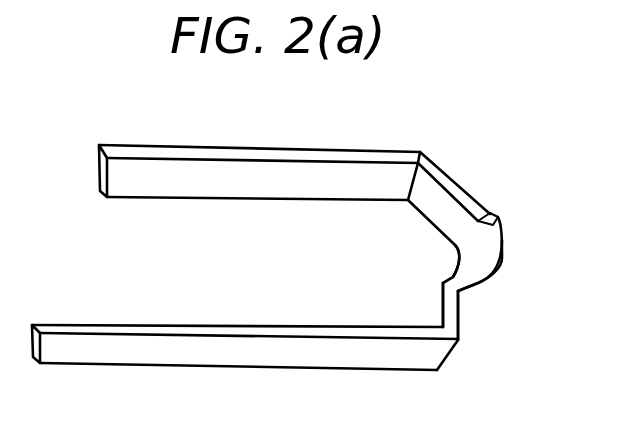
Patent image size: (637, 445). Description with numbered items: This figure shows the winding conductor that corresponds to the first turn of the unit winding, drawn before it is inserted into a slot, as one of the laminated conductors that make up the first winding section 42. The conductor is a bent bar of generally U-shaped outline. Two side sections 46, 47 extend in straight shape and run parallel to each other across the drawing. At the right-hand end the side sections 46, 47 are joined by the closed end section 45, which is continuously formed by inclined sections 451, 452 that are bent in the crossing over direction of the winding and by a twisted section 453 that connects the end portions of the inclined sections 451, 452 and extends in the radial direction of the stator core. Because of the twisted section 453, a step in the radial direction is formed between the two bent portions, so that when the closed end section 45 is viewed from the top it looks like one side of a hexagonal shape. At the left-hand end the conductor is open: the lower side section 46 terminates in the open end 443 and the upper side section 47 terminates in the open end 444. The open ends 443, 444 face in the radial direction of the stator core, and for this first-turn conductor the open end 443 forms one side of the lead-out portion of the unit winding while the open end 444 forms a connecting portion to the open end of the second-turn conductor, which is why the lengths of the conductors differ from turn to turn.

The first winding section 42 is at (276, 147).
The open end 444 is at (120, 172).
The side section 47 is at (275, 188).
The closed end section 45 is at (497, 221).
The inclined section 452 is at (440, 200).
The twisted section 453 is at (490, 257).
The inclined section 451 is at (432, 327).
The side section 46 is at (293, 355).
The open end 443 is at (67, 352).